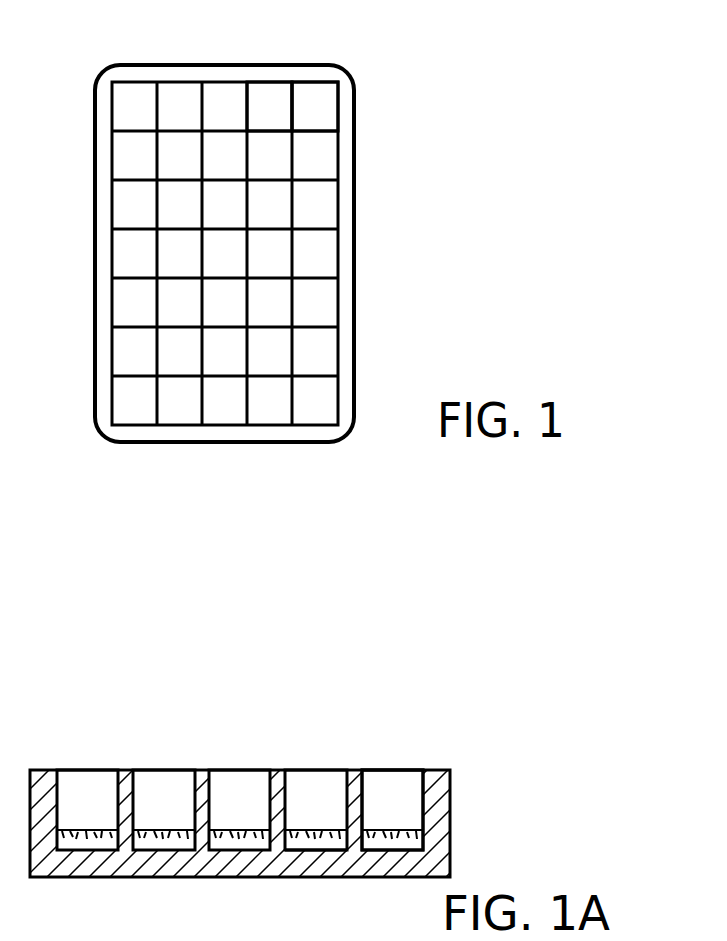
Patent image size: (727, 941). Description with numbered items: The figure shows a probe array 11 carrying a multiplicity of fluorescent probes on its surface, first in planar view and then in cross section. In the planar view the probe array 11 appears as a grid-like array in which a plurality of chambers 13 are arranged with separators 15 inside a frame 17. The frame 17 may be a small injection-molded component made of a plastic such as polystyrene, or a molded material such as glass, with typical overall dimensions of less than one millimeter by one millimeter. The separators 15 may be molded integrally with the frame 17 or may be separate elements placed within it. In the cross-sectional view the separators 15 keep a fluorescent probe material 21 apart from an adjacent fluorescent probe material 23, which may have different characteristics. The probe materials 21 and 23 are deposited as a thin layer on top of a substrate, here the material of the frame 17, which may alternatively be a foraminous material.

In FIG. 1, the probe array 11 is at (340, 283).
In FIG. 1, the chambers 13 is at (270, 98).
In FIG. 1A, the chambers 13 is at (387, 798).
In FIG. 1, the separators 15 is at (293, 150).
In FIG. 1A, the separators 15 is at (130, 770).
In FIG. 1, the frame 17 is at (358, 213).
In FIG. 1A, the frame 17 is at (450, 803).
In FIG. 1A, the fluorescent probe material 21 is at (240, 830).
In FIG. 1A, the adjacent fluorescent probe material 23 is at (322, 830).